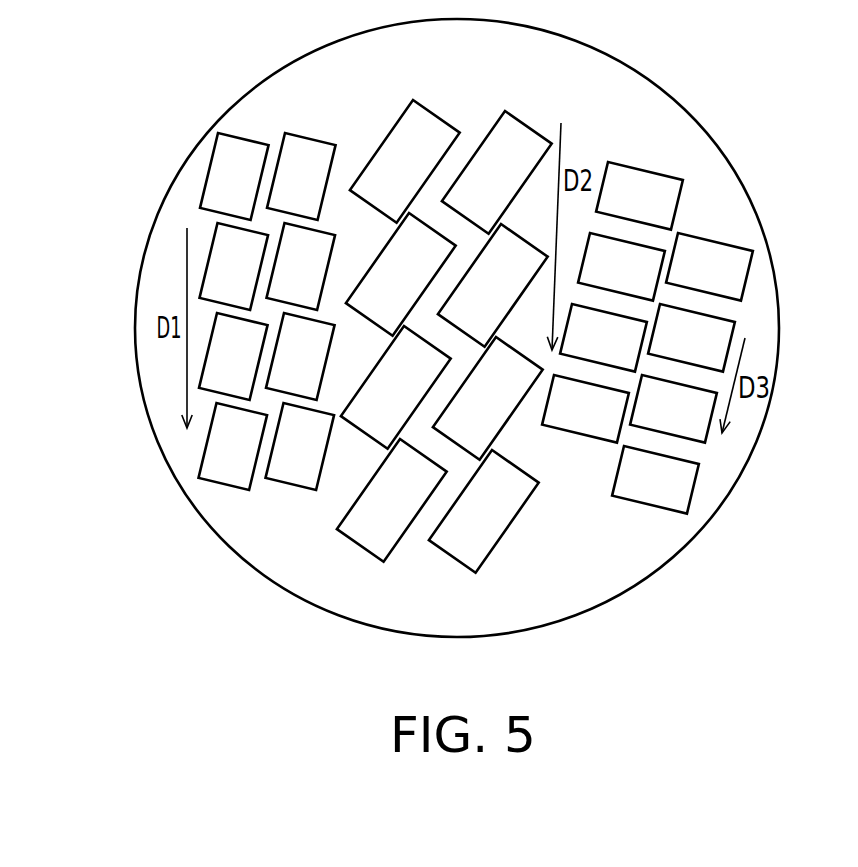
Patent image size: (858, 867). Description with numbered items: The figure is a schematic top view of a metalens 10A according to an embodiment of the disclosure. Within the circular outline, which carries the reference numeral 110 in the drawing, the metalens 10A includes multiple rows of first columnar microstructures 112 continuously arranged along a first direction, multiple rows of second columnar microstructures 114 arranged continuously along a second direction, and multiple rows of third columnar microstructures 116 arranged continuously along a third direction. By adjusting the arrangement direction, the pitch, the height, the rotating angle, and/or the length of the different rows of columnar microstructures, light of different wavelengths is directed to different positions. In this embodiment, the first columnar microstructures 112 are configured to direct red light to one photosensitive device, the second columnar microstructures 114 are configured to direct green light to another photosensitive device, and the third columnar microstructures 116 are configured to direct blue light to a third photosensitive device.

The metalens 10A is at (712, 60).
The wafer (carrier substrate) 110 is at (742, 473).
The first columnar microstructures 112 is at (267, 311).
The second columnar microstructures 114 is at (444, 336).
The third columnar microstructures 116 is at (647, 338).